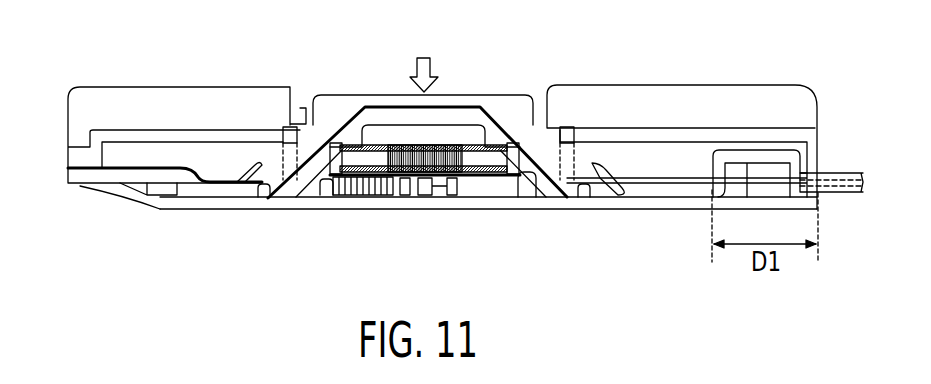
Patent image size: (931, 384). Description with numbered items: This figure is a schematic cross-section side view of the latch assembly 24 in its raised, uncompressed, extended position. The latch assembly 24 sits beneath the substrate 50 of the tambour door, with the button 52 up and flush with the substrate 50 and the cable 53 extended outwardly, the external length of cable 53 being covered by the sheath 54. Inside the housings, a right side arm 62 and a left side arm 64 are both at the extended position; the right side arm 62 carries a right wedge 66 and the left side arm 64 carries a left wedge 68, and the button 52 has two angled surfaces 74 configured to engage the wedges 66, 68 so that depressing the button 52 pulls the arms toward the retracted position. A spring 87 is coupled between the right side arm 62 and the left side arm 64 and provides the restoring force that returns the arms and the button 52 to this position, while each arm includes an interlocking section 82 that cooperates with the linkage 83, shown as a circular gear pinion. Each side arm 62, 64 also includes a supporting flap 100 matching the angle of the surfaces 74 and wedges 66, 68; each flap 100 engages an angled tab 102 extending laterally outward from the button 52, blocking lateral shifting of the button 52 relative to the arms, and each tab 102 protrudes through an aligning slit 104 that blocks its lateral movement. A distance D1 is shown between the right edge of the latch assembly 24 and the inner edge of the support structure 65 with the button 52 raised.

The latch assembly 24 is at (365, 46).
The substrate 50 is at (726, 100).
The button 52 is at (476, 94).
The cable 53 is at (834, 227).
The sheath 54 is at (826, 176).
The right side arm 62 is at (665, 190).
The left side arm 64 is at (88, 173).
The support structure 65 is at (770, 188).
The right wedge 66 is at (528, 176).
The left wedge 68 is at (308, 190).
The surfaces 74 is at (308, 165).
The interlocking section 82 is at (348, 188).
The linkage 83 is at (447, 184).
The spring 87 is at (416, 152).
The flap 100 is at (201, 183).
The tab 102 is at (272, 160).
The slit 104 is at (264, 190).